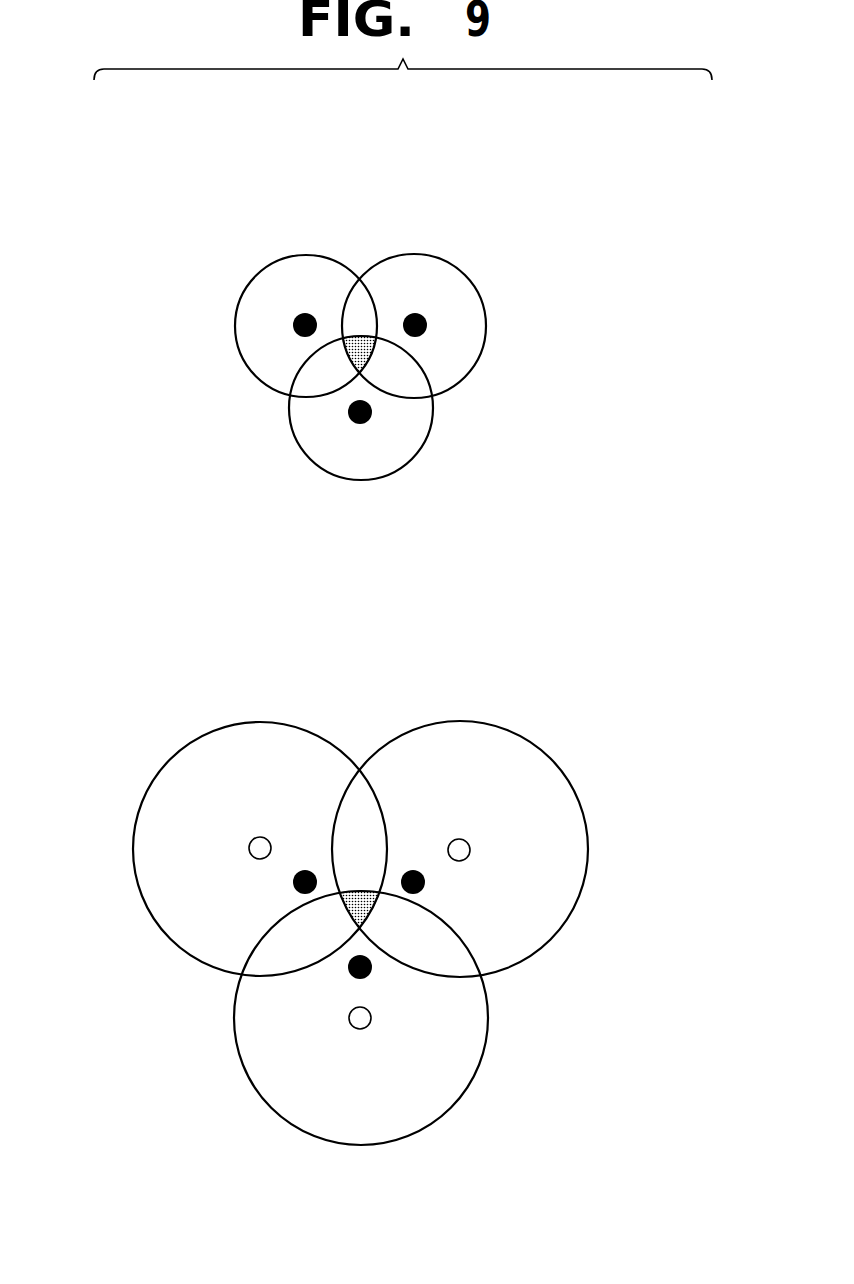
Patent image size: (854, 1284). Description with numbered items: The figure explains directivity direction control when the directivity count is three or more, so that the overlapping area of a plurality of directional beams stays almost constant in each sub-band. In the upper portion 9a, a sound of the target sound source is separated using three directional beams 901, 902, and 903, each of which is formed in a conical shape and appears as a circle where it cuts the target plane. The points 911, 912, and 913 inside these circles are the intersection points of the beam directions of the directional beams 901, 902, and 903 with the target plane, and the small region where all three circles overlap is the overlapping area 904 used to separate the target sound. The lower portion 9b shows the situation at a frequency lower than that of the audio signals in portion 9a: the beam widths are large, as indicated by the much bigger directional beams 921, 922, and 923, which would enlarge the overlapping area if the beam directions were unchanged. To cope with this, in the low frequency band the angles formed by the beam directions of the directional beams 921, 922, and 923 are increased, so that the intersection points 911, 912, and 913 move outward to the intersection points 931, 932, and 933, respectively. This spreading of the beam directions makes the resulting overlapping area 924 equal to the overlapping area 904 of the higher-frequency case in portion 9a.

The high-frequency example view 9a is at (562, 204).
The low-frequency example view 9b is at (566, 712).
The directional beam 901 is at (306, 257).
The directional beam 902 is at (413, 257).
The directional beam 903 is at (360, 480).
The overlapping area 904 is at (362, 365).
The intersection point 911 is at (300, 320).
The intersection point 912 is at (418, 316).
The intersection point 913 is at (356, 415).
The directional beam 921 is at (262, 722).
The directional beam 922 is at (460, 722).
The directional beam 923 is at (362, 1145).
The overlapping area 924 is at (362, 930).
The intersection point 931 is at (260, 836).
The intersection point 932 is at (459, 838).
The intersection point 933 is at (360, 1029).